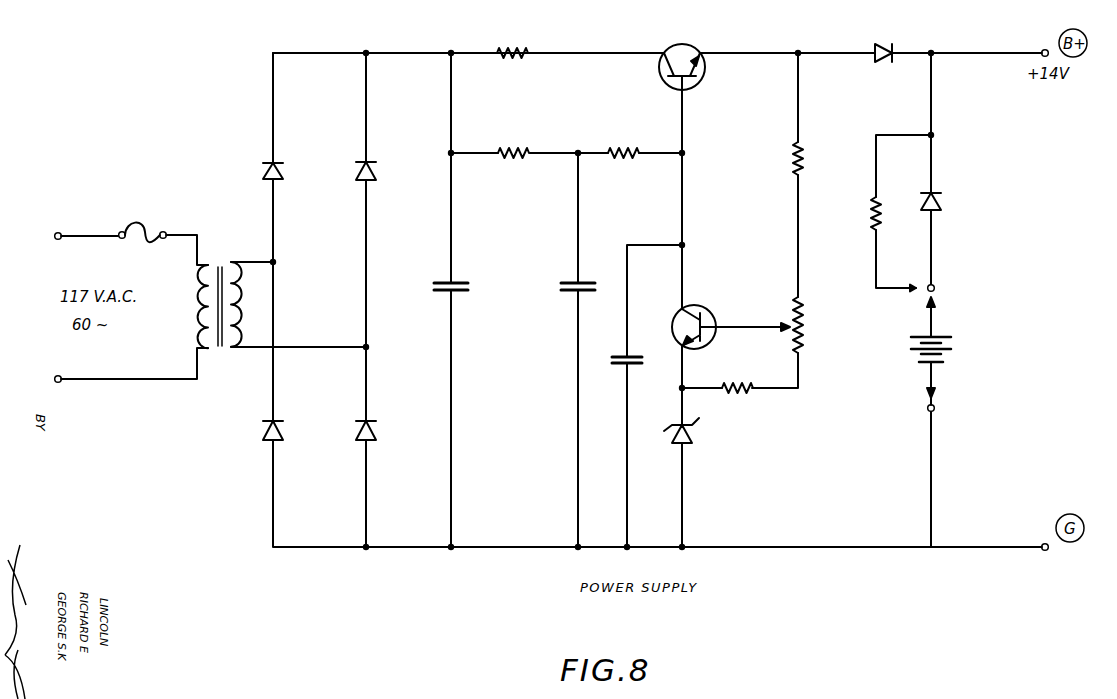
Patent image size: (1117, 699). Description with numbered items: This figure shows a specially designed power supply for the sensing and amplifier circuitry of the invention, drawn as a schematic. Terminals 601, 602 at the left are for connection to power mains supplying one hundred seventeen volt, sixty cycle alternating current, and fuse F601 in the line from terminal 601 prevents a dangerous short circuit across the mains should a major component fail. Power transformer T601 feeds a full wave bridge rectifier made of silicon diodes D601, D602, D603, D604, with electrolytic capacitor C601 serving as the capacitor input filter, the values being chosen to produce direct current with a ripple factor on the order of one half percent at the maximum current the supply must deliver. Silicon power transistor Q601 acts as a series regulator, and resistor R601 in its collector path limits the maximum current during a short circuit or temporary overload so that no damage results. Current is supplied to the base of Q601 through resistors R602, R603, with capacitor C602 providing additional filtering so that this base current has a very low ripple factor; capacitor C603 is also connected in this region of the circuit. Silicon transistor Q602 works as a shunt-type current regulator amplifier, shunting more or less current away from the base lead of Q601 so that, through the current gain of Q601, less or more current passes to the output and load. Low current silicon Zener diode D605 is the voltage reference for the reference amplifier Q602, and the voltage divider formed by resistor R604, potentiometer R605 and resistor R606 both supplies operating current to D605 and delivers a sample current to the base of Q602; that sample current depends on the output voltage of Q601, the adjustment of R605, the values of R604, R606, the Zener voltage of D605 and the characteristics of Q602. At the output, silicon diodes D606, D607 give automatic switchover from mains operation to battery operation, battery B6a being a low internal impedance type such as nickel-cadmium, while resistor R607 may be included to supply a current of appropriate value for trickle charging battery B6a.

The terminal 601 is at (55, 237).
The terminal 602 is at (54, 380).
The fuse F601 is at (150, 231).
The power transformer T601 is at (226, 258).
The silicon diode D601 is at (263, 426).
The silicon diode D602 is at (358, 428).
The silicon diode D603 is at (262, 172).
The silicon diode D604 is at (356, 172).
The electrolytic capacitor C601 is at (428, 287).
The capacitor C602 is at (558, 290).
The capacitor C603 is at (607, 357).
The resistor R601 is at (497, 58).
The resistor R602 is at (507, 151).
The resistor R603 is at (608, 151).
The resistor R604 is at (792, 162).
The potentiometer R605 is at (804, 322).
The resistor R606 is at (733, 396).
The resistor R607 is at (872, 215).
The silicon power transistor Q601 is at (691, 47).
The silicon transistor Q602 is at (708, 307).
The Zener diode D605 is at (691, 444).
The silicon diode D606 is at (882, 47).
The silicon diode D607 is at (943, 210).
The battery B6a is at (950, 348).